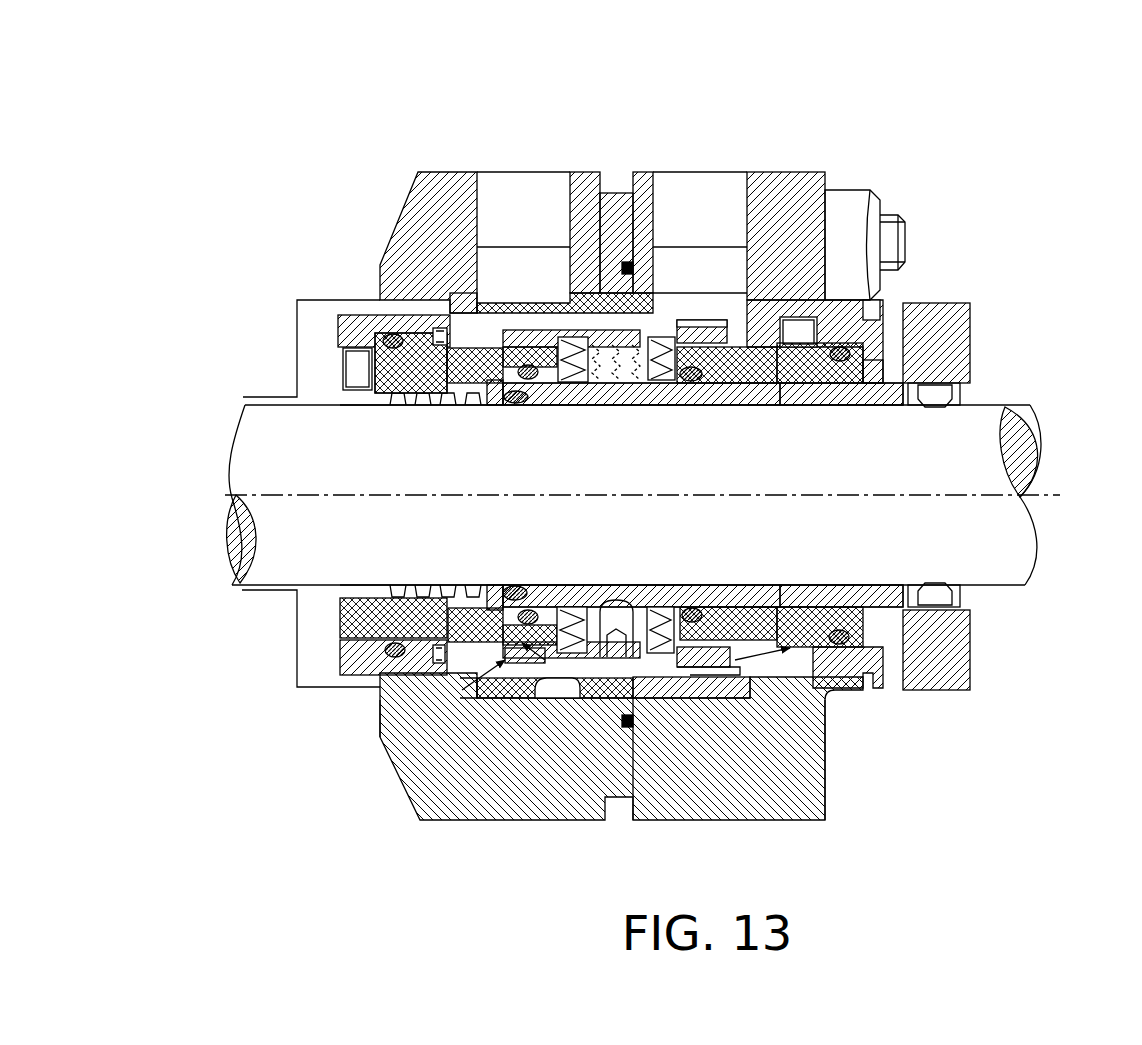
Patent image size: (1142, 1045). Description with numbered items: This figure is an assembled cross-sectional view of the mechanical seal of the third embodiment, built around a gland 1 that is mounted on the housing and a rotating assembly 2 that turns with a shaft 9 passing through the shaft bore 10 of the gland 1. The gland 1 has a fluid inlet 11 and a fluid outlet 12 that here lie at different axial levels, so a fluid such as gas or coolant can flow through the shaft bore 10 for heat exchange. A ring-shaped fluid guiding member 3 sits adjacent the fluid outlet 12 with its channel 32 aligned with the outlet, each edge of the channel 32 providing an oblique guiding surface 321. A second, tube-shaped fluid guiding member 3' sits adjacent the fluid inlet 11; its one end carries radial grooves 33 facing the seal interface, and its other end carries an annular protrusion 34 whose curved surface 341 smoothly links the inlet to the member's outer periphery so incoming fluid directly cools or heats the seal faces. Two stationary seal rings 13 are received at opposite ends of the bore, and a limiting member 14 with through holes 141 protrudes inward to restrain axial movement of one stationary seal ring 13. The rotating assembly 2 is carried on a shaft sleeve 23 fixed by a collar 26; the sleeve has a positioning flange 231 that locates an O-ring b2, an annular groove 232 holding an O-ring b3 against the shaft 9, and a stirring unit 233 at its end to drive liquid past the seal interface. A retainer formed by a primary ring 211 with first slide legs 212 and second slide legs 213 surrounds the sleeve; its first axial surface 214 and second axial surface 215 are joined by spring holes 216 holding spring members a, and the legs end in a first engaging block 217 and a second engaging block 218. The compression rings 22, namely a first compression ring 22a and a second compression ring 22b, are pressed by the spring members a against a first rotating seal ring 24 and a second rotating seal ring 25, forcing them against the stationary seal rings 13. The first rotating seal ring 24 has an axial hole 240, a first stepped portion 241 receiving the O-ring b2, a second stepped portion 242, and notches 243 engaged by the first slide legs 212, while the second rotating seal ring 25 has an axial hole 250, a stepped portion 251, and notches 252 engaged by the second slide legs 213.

The gland 1 is at (478, 838).
The rotating assembly 2 is at (425, 750).
The fluid guiding member 3 is at (643, 195).
The fluid guiding member 3' is at (555, 768).
The shaft 9 is at (990, 415).
The shaft bore 10 is at (330, 395).
The fluid inlet 11 is at (490, 190).
The fluid outlet 12 is at (683, 240).
The stationary seal ring 13 is at (955, 345).
The limiting member 14 is at (385, 700).
The through holes 141 is at (377, 713).
The compression rings 22 is at (716, 428).
The first compression ring 22a is at (560, 386).
The second compression ring 22b is at (655, 386).
The shaft sleeve 23 is at (885, 393).
The first rotating seal ring 24 is at (340, 617).
The second rotating seal ring 25 is at (783, 250).
The collar 26 is at (965, 650).
The channel 32 is at (830, 290).
The guiding surface 321 is at (890, 258).
The radial grooves 33 is at (385, 330).
The annular protrusion 34 is at (540, 305).
The curved surface 341 is at (492, 300).
The primary ring 211 is at (548, 330).
The first slide legs 212 is at (480, 300).
The second slide legs 213 is at (705, 330).
The first axial surface 214 is at (575, 640).
The second axial surface 215 is at (653, 640).
The spring holes 216 is at (628, 262).
The first engaging block 217 is at (470, 330).
The second engaging block 218 is at (790, 318).
The positioning flange 231 is at (470, 305).
The annular groove 232 is at (437, 398).
The stirring unit 233 is at (385, 380).
The axial hole 240 is at (407, 408).
The first stepped portion 241 is at (528, 612).
The second stepped portion 242 is at (475, 585).
The notches 243 is at (500, 660).
The axial hole 250 is at (800, 403).
The stepped portion 251 is at (820, 405).
The notches 252 is at (810, 718).
The spring members a is at (662, 335).
The O-ring b2 is at (580, 600).
The O-ring b3 is at (513, 587).